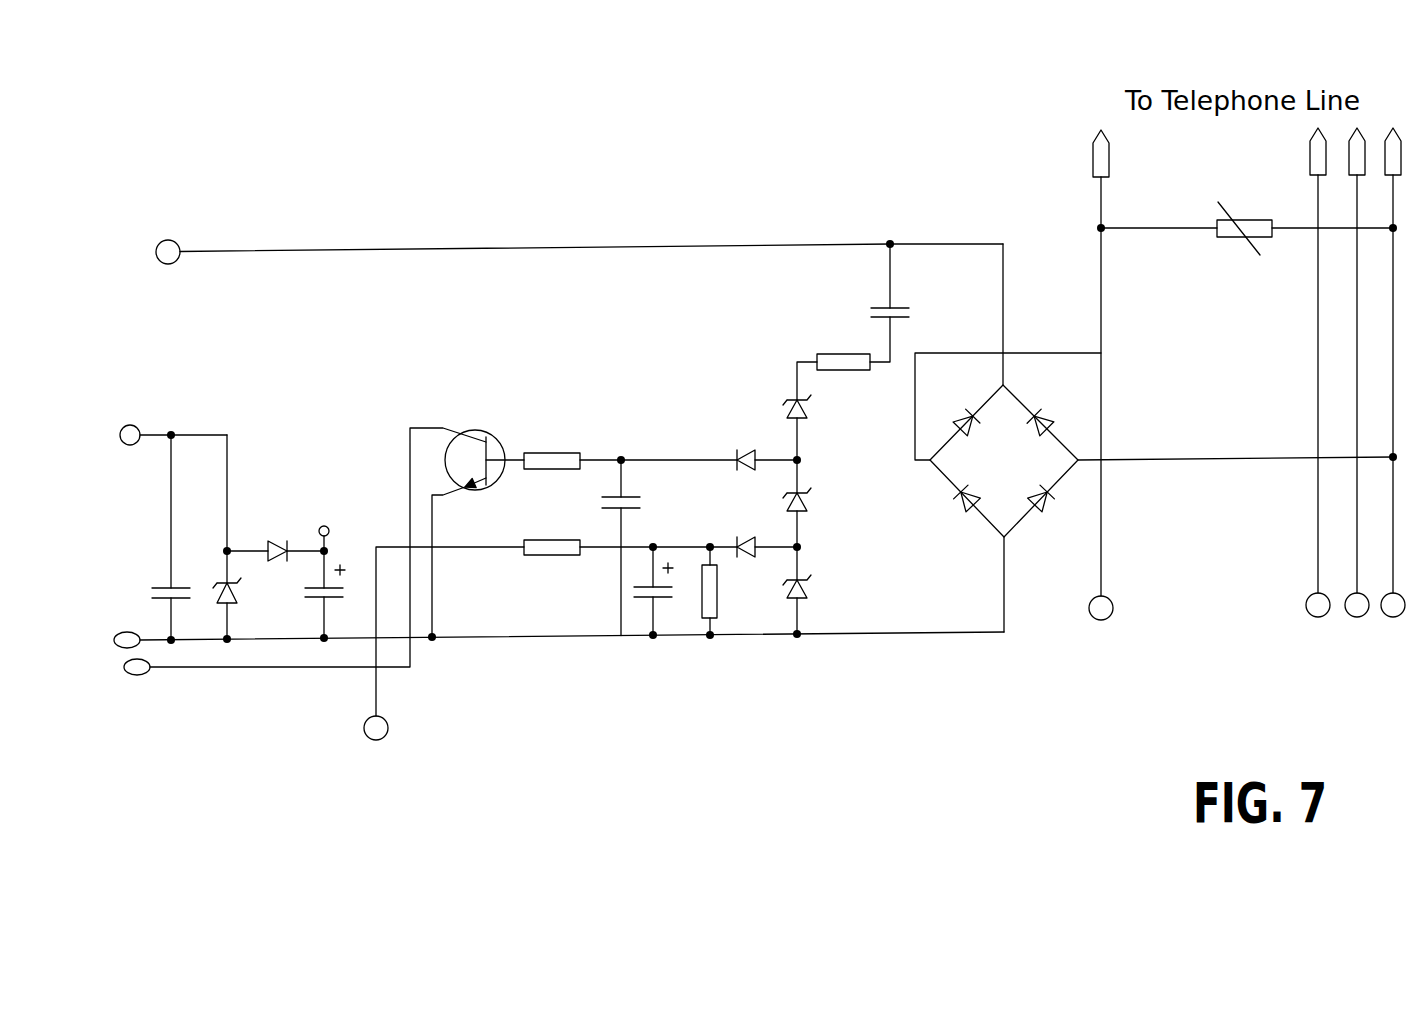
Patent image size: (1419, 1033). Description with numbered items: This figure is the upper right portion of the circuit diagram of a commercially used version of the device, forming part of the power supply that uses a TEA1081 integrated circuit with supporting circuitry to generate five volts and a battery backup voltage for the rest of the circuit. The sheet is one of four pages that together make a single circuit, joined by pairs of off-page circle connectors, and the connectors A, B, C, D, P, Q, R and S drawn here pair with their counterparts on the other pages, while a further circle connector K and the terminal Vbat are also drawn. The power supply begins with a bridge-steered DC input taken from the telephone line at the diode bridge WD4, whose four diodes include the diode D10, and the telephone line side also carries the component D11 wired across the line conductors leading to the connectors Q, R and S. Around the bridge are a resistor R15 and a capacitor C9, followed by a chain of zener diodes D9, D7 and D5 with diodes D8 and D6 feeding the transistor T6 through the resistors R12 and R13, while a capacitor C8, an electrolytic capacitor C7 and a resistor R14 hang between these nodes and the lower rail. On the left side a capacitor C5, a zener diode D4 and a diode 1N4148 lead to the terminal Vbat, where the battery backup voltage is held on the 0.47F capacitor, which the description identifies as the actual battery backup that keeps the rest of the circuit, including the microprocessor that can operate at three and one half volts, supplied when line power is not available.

The off-page circle connector A is at (579, 233).
The off-page circle connector B is at (138, 427).
The off-page circle connector C is at (128, 632).
The off-page circle connector D is at (137, 675).
The terminal K is at (364, 729).
The off-page circle connector P is at (1089, 606).
The off-page circle connector Q is at (1306, 602).
The off-page circle connector R is at (1349, 599).
The off-page circle connector S is at (1390, 597).
The battery voltage terminal Vbat is at (338, 519).
The capacitor 1uF 16V C5 is at (178, 588).
The zener diode 5V1 D4 is at (216, 596).
The diode 1N4148 is at (268, 546).
The 0.47F capacitor 0.47F is at (337, 608).
The transistor BC549 T6 is at (467, 488).
The resistor 100K R12 is at (540, 452).
The resistor 220K R13 is at (522, 556).
The capacitor 0.1uF C8 is at (638, 500).
The capacitor 10uF/16V C7 is at (643, 600).
The resistor 560K R14 is at (702, 612).
The diode 1N4148 D8 is at (753, 453).
The diode 1N4148 D6 is at (748, 558).
The zener diode 12V D9 is at (803, 412).
The zener diode 5V1 D7 is at (806, 500).
The zener diode 5V1 D5 is at (807, 585).
The resistor 100K R15 is at (840, 354).
The capacitor 220nF C9 is at (866, 313).
The bridge WD4 is at (1008, 438).
The bridge diode D10 is at (1052, 420).
The varistor BR211-280 D11 is at (1262, 217).